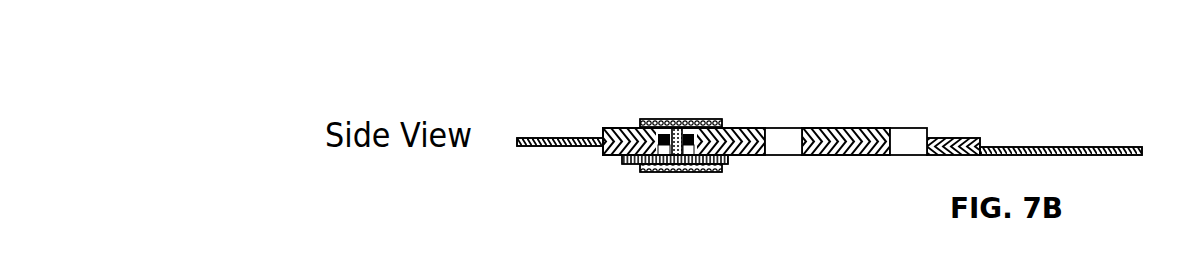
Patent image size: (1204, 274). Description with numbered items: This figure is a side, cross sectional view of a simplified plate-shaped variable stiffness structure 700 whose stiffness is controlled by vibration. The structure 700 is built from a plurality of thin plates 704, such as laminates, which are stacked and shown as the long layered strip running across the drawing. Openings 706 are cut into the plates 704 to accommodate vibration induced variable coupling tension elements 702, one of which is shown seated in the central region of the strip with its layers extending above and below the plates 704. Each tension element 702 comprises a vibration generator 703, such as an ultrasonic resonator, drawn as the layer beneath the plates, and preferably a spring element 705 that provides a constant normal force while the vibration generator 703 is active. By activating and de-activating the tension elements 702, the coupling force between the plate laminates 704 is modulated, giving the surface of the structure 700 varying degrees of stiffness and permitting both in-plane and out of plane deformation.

The plate-shaped variable stiffness structure 700 is at (981, 91).
The vibration induced variable coupling tension element 702 is at (640, 118).
The vibration generator 703 is at (625, 165).
The thin plate 704 is at (880, 133).
The spring element 705 is at (688, 134).
The opening 706 is at (688, 150).